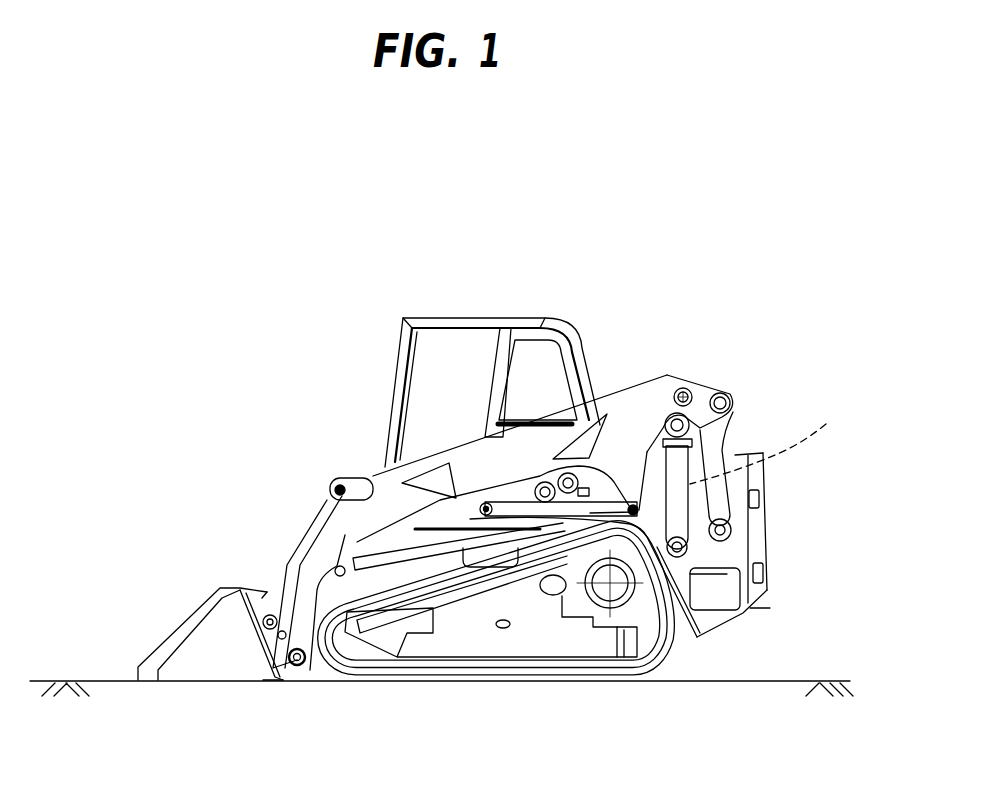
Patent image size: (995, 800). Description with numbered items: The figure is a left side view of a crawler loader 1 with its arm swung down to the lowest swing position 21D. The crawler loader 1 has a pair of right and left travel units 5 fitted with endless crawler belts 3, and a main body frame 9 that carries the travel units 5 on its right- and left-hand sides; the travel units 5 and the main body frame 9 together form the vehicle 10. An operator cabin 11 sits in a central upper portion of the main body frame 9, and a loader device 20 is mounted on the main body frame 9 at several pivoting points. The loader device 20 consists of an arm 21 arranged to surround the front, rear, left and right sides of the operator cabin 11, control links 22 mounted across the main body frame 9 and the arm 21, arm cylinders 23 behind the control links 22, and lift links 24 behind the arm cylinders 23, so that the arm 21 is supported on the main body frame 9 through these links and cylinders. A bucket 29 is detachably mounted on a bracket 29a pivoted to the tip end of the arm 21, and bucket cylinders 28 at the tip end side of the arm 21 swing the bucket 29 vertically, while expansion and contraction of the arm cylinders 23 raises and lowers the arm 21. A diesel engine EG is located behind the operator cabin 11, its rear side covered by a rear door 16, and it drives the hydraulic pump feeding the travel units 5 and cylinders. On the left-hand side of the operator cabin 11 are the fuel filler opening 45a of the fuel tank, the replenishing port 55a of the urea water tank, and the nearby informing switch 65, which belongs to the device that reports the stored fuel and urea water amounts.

The crawler loader 1 is at (720, 218).
The endless crawler belts 3 is at (580, 675).
The travel units 5 is at (672, 668).
The main body frame 9 is at (722, 620).
The vehicle 10 is at (766, 514).
The operator cabin 11 is at (478, 318).
The rear door 16 is at (764, 555).
The loader device 20 is at (639, 302).
The arm 21 is at (538, 431).
The lowest swing position 21D is at (504, 456).
The control links 22 is at (503, 503).
The arm cylinders 23 is at (680, 503).
The lift links 24 is at (719, 430).
The bucket cylinders 28 is at (282, 583).
The bucket 29 is at (193, 650).
The bracket 29a is at (273, 637).
The fuel filler opening 45a is at (545, 503).
The replenishing port 55a is at (564, 473).
The informing switch 65 is at (587, 488).
The engine EG is at (767, 439).